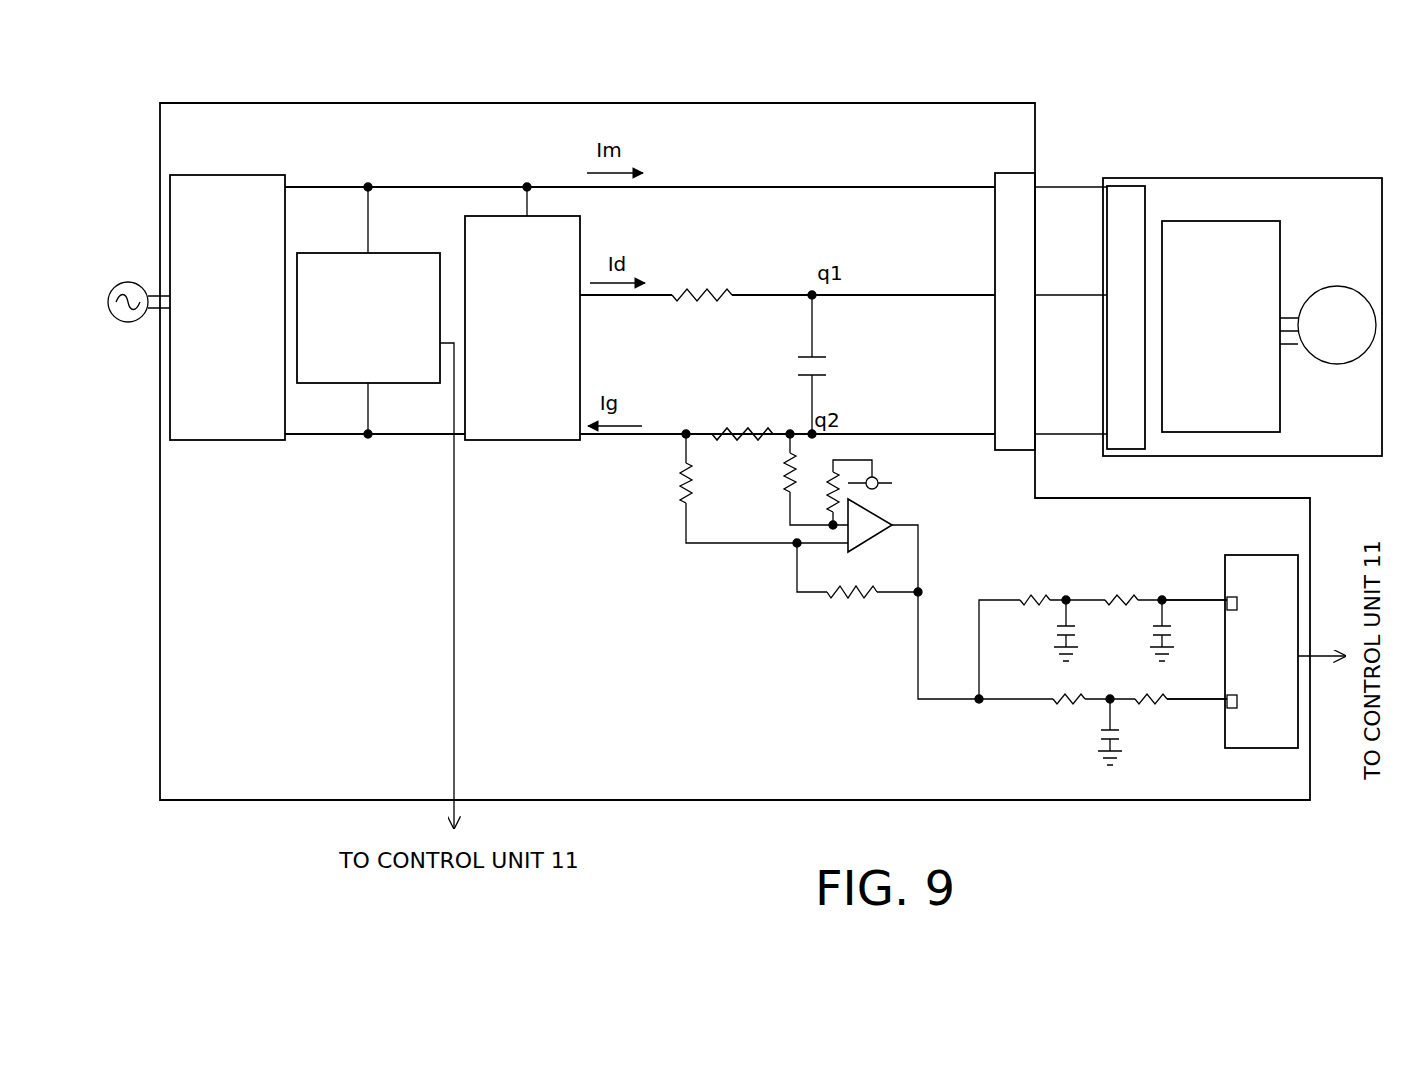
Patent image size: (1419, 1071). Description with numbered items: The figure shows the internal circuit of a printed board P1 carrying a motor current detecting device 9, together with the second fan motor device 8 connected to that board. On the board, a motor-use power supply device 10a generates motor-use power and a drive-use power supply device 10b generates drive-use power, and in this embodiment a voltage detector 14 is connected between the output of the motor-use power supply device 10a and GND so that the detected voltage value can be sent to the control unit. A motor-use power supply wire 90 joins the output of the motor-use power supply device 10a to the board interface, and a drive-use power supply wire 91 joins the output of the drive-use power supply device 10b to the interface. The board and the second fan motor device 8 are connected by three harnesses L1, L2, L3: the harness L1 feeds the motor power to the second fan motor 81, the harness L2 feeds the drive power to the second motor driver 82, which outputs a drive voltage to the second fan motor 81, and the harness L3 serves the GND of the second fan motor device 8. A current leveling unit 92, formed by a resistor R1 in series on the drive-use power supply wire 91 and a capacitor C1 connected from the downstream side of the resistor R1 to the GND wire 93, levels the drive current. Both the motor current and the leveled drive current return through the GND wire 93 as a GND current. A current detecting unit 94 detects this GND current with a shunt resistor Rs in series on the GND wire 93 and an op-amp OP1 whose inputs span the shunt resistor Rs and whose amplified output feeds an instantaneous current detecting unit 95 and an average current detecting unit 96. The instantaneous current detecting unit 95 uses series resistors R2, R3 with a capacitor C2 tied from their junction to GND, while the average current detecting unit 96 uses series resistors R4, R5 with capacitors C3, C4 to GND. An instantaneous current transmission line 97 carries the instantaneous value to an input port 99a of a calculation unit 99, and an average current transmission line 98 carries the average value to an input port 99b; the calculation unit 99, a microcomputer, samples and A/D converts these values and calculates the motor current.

The motor current detecting device 9 is at (868, 155).
The motor-use power supply device 10a is at (233, 183).
The voltage detector 14 is at (328, 260).
The drive-use power supply device 10b is at (547, 232).
The motor-use power supply wire 90 is at (712, 188).
The current leveling unit 92 is at (780, 282).
The drive-use power supply wire 91 is at (892, 293).
The GND wire 93 is at (622, 436).
The current detecting unit 94 is at (818, 568).
The instantaneous current detecting unit 95 is at (1079, 743).
The average current detecting unit 96 is at (1093, 609).
The instantaneous current transmission line 97 is at (1195, 704).
The average current transmission line 98 is at (1180, 602).
The calculation unit 99 is at (1279, 650).
The input port 99a is at (1232, 597).
The input port 99b is at (1236, 710).
The printed board P1 is at (1005, 108).
The harness L1 is at (1063, 190).
The harness L2 is at (1055, 302).
The harness L3 is at (1053, 437).
The second fan motor device 8 is at (1259, 287).
The second motor driver 82 is at (1253, 235).
The second fan motor 81 is at (1369, 324).
The resistor R1 is at (725, 288).
The shunt resistor Rs is at (737, 432).
The capacitor C1 is at (830, 357).
The op-amp OP1 is at (895, 517).
The resistor R2 is at (1025, 598).
The resistor R3 is at (1108, 598).
The resistor R4 is at (1082, 703).
The resistor R5 is at (1157, 705).
The capacitor C2 is at (1057, 627).
The capacitor C3 is at (1153, 627).
The capacitor C4 is at (1117, 741).